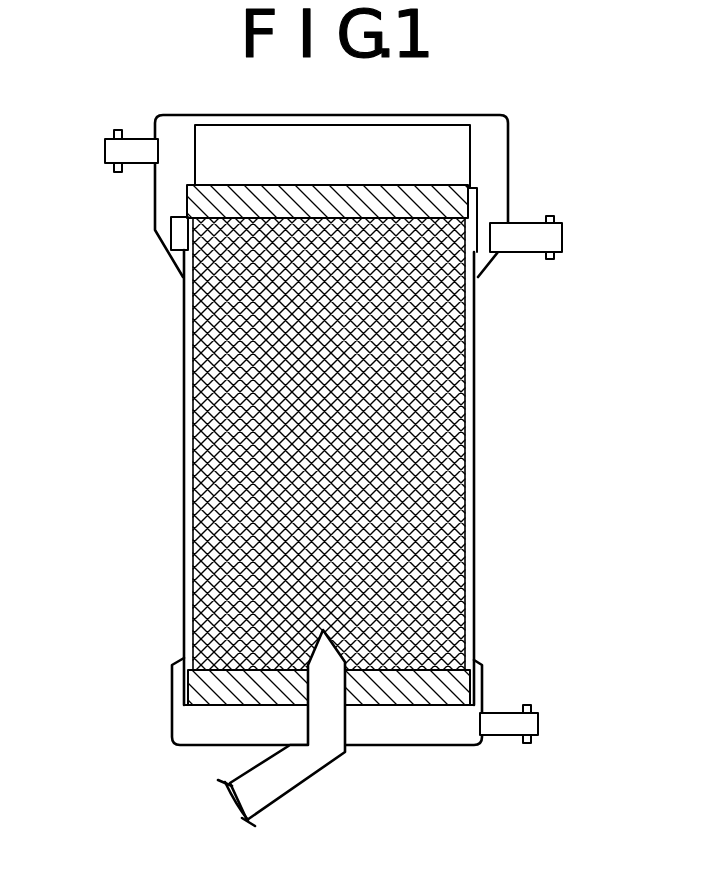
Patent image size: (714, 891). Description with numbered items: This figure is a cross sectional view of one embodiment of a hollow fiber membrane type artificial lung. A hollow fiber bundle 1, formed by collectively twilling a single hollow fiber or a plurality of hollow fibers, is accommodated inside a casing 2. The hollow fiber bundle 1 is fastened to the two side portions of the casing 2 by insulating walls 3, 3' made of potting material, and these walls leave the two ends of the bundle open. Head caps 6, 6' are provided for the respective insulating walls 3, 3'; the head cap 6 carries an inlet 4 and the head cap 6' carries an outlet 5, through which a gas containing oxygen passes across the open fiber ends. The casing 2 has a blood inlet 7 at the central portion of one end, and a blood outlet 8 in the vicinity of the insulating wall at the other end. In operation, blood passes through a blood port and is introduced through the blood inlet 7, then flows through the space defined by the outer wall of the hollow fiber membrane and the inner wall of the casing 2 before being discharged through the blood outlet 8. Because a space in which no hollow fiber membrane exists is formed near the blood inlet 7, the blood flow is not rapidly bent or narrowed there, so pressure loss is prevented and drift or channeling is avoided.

The hollow fiber bundle 1 is at (447, 383).
The casing 2 is at (478, 447).
The insulating wall 3 is at (374, 191).
The insulating wall 3' is at (365, 675).
The inlet 4 is at (105, 152).
The outlet 5 is at (540, 724).
The head cap 6 is at (358, 196).
The head cap 6' is at (327, 736).
The blood inlet 7 is at (300, 782).
The blood outlet 8 is at (565, 237).